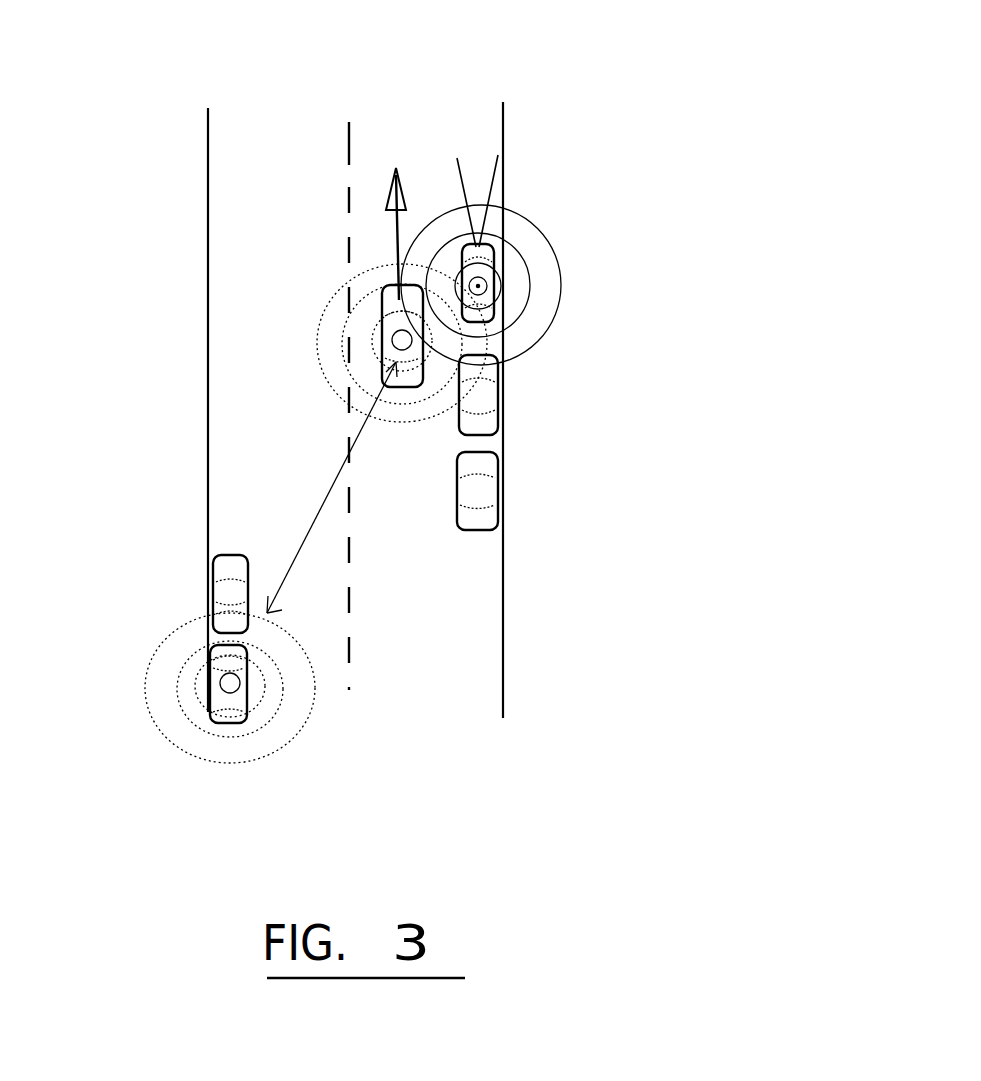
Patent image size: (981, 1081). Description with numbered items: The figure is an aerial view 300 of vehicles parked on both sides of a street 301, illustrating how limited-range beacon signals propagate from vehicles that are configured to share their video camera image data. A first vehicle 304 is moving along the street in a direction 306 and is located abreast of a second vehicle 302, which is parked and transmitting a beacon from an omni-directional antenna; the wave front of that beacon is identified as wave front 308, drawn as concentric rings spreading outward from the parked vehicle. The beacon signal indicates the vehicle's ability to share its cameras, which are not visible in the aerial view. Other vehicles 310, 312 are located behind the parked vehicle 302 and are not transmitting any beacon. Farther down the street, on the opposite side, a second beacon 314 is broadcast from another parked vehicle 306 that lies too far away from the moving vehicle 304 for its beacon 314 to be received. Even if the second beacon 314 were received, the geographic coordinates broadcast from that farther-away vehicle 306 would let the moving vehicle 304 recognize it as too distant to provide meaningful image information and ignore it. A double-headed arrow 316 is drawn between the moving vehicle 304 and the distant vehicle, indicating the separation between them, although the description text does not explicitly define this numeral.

The aerial view 300 is at (637, 53).
The street 301 is at (460, 668).
The second vehicle 302 is at (495, 262).
The first vehicle 304 is at (383, 335).
The vehicle / direction of travel 306 is at (388, 230).
The wave front 308 is at (543, 342).
The other vehicle 310 is at (487, 420).
The other vehicle 312 is at (473, 520).
The second beacon 314 is at (293, 733).
The distance between vehicles 316 is at (322, 512).